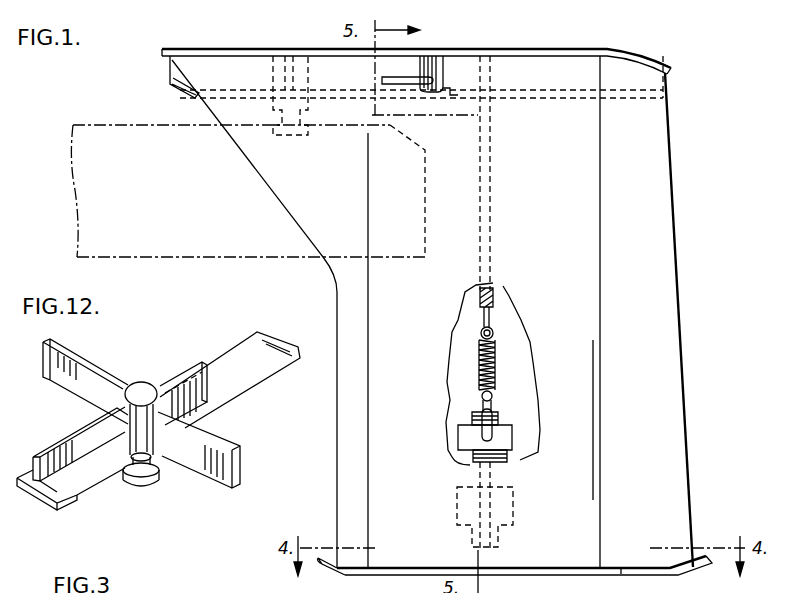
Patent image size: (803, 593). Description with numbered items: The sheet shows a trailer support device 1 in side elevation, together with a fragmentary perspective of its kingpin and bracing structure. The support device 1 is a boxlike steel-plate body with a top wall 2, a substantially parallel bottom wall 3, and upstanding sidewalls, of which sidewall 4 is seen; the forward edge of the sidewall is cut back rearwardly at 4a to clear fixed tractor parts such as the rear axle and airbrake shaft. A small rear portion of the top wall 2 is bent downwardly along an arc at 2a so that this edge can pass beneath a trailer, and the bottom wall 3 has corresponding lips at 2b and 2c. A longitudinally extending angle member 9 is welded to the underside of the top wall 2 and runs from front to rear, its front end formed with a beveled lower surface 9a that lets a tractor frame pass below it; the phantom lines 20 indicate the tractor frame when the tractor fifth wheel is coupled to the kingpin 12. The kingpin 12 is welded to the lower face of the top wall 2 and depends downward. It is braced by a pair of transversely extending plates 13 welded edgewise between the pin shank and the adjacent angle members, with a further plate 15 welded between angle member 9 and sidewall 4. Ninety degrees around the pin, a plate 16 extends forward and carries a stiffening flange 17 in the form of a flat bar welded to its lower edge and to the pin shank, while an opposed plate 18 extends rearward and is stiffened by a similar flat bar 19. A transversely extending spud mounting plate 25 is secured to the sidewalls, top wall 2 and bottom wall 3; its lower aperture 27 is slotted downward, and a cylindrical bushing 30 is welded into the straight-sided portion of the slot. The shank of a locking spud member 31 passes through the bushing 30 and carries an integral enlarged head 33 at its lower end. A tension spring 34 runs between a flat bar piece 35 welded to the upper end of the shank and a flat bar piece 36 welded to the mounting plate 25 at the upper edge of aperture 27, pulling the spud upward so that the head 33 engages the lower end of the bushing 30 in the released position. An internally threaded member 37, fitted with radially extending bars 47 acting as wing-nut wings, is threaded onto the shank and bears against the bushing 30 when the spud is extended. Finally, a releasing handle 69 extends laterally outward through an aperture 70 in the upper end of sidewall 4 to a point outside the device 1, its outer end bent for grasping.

In FIG. 1, the support device 1 is at (668, 142).
In FIG. 1, the top wall 2 is at (265, 49).
In FIG. 1, the arcuately bent portion of top wall 2a is at (676, 65).
In FIG. 1, the bottom rail lip 2b is at (693, 566).
In FIG. 1, the bottom rail lip 2c is at (320, 572).
In FIG. 1, the bottom wall 3 is at (621, 574).
In FIG. 1, the sidewall 4 is at (550, 242).
In FIG. 1, the cut-back front edge of sidewall 4a is at (293, 222).
In FIG. 1, the angle member 9 is at (548, 99).
In FIG. 1, the beveled lower surface 9a is at (168, 94).
In FIG. 1, the kingpin 12 is at (295, 135).
In FIG. 12, the kingpin 12 is at (146, 490).
In FIG. 12, the transversely extending plate 13 is at (108, 366).
In FIG. 1, the transversely extending plate 15 is at (272, 75).
In FIG. 12, the plate 16 is at (72, 437).
In FIG. 12, the stiffening flange 17 is at (73, 502).
In FIG. 12, the plate 18 is at (185, 371).
In FIG. 12, the flat bar 19 is at (228, 401).
In FIG. 1, the tractor frame 20 is at (72, 148).
In FIG. 1, the spud mounting plate 25 is at (493, 187).
In FIG. 1, the lower aperture 27 is at (497, 311).
In FIG. 1, the cylindrical bushing 30 is at (457, 504).
In FIG. 1, the locking spud member 31 is at (507, 458).
In FIG. 1, the enlarged head 33 is at (500, 539).
In FIG. 1, the tension spring 34 is at (497, 358).
In FIG. 1, the flat bar stock piece 35 is at (478, 405).
In FIG. 1, the flat bar stock piece 36 is at (484, 314).
In FIG. 1, the internally threaded member 37 is at (512, 441).
In FIG. 1, the radially extending bars 47 is at (485, 433).
In FIG. 1, the releasing handle 69 is at (412, 85).
In FIG. 1, the aperture 70 is at (434, 60).